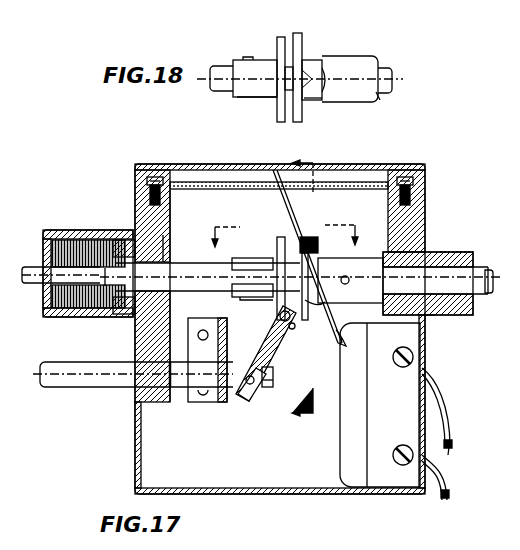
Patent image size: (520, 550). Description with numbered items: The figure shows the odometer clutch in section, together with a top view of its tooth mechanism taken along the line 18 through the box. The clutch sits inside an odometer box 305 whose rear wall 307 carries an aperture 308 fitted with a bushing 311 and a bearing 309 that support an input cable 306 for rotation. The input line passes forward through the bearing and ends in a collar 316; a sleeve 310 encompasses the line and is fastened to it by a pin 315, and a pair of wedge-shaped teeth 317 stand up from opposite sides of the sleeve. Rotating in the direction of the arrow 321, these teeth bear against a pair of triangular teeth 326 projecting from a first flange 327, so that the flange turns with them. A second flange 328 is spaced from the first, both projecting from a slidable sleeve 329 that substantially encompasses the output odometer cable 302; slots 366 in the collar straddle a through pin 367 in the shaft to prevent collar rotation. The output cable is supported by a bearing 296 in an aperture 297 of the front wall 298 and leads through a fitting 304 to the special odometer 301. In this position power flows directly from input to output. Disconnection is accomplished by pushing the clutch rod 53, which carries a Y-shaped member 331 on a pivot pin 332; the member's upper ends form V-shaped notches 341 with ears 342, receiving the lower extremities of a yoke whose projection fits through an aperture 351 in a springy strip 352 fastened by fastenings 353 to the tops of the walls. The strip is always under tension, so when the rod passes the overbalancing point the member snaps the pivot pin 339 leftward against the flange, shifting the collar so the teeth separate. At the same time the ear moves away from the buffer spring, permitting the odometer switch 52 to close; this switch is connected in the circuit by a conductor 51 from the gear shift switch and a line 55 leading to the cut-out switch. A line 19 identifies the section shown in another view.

In FIG. 18, the odometer cable 302 is at (218, 68).
In FIG. 17, the odometer cable 302 is at (190, 266).
In FIG. 18, the slidable sleeve 329 is at (255, 60).
In FIG. 18, the through pin 367 is at (248, 97).
In FIG. 17, the through pin 367 is at (240, 297).
In FIG. 18, the second flange 328 is at (280, 37).
In FIG. 17, the second flange 328 is at (279, 237).
In FIG. 18, the first flange 327 is at (297, 33).
In FIG. 17, the first flange 327 is at (305, 237).
In FIG. 18, the collar 316 is at (308, 62).
In FIG. 18, the triangular teeth 326 is at (310, 100).
In FIG. 18, the arrow 321 is at (355, 72).
In FIG. 18, the wedge-shaped teeth 317 is at (326, 68).
In FIG. 18, the input cable 306 is at (386, 68).
In FIG. 17, the input cable 306 is at (488, 270).
In FIG. 18, the sleeve 310 is at (380, 97).
In FIG. 17, the sleeve 310 is at (322, 262).
In FIG. 17, the odometer box 305 is at (426, 170).
In FIG. 17, the rear wall 307 is at (424, 212).
In FIG. 17, the fastenings 353 is at (160, 177).
In FIG. 17, the springy strip 352 is at (331, 182).
In FIG. 17, the section line 19 is at (299, 291).
In FIG. 17, the section line 18— 18 is at (291, 226).
In FIG. 17, the fitting 304 is at (92, 230).
In FIG. 17, the special odometer 301 is at (30, 267).
In FIG. 17, the bearing 296 is at (122, 240).
In FIG. 17, the front wall 298 is at (172, 215).
In FIG. 17, the aperture 297 is at (172, 246).
In FIG. 17, the slots 366 is at (258, 265).
In FIG. 17, the aperture 351 is at (275, 178).
In FIG. 17, the pin 315 is at (348, 277).
In FIG. 17, the aperture 308 is at (414, 252).
In FIG. 17, the bushing 311 is at (460, 250).
In FIG. 17, the bearing 309 is at (435, 316).
In FIG. 17, the ears 342 is at (280, 316).
In FIG. 17, the pivot pin 339 is at (260, 366).
In FIG. 17, the clutch rod 53 is at (103, 387).
In FIG. 17, the Y-shaped member 331 is at (278, 362).
In FIG. 17, the pivot pin 332 is at (270, 381).
In FIG. 17, the V-shaped notch 341 is at (327, 303).
In FIG. 17, the odometer switch 52 is at (380, 405).
In FIG. 17, the electrical conductor 51 is at (450, 418).
In FIG. 17, the line 55 is at (446, 482).